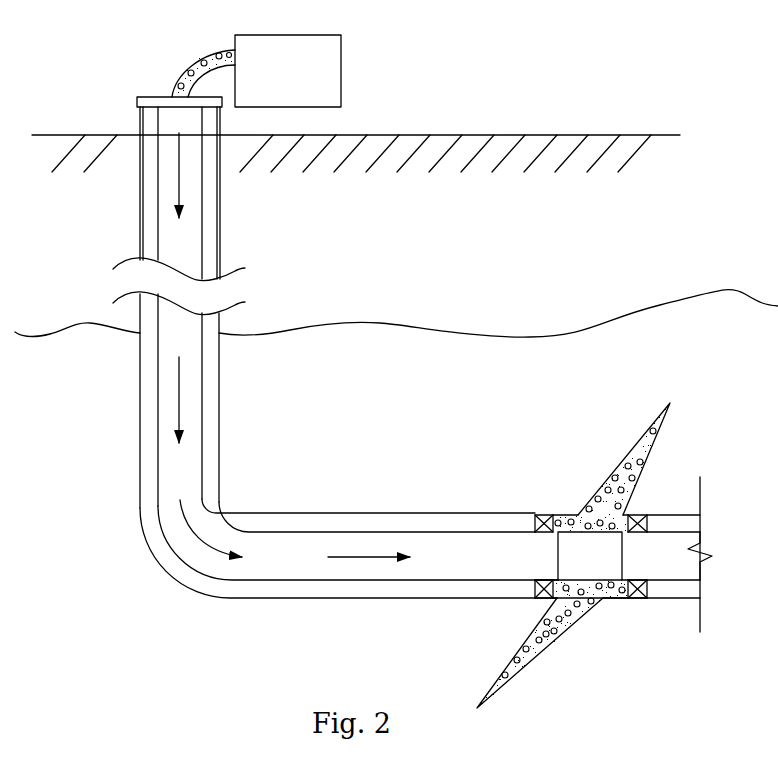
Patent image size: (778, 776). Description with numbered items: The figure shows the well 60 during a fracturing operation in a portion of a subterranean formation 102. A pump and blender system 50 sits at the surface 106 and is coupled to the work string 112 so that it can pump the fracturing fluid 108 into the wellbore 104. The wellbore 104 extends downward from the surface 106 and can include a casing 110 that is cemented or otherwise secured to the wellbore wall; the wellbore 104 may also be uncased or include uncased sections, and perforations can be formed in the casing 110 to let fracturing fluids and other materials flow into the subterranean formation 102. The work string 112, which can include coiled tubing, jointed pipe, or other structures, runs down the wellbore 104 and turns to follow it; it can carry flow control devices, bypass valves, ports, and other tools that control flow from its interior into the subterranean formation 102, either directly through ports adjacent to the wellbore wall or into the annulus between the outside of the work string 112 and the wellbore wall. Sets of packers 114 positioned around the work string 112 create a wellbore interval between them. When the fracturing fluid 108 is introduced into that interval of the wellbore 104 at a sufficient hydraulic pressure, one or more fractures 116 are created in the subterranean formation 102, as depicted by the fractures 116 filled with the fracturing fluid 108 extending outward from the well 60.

The pump and blender system 50 is at (309, 85).
The well 60 is at (151, 589).
The subterranean formation 102 is at (439, 363).
The wellbore 104 is at (149, 217).
The surface 106 is at (510, 135).
The fracturing fluid 108 is at (188, 73).
The casing 110 is at (142, 254).
The work string 112 is at (158, 437).
The packers 114 is at (543, 514).
The fractures 116 is at (612, 463).